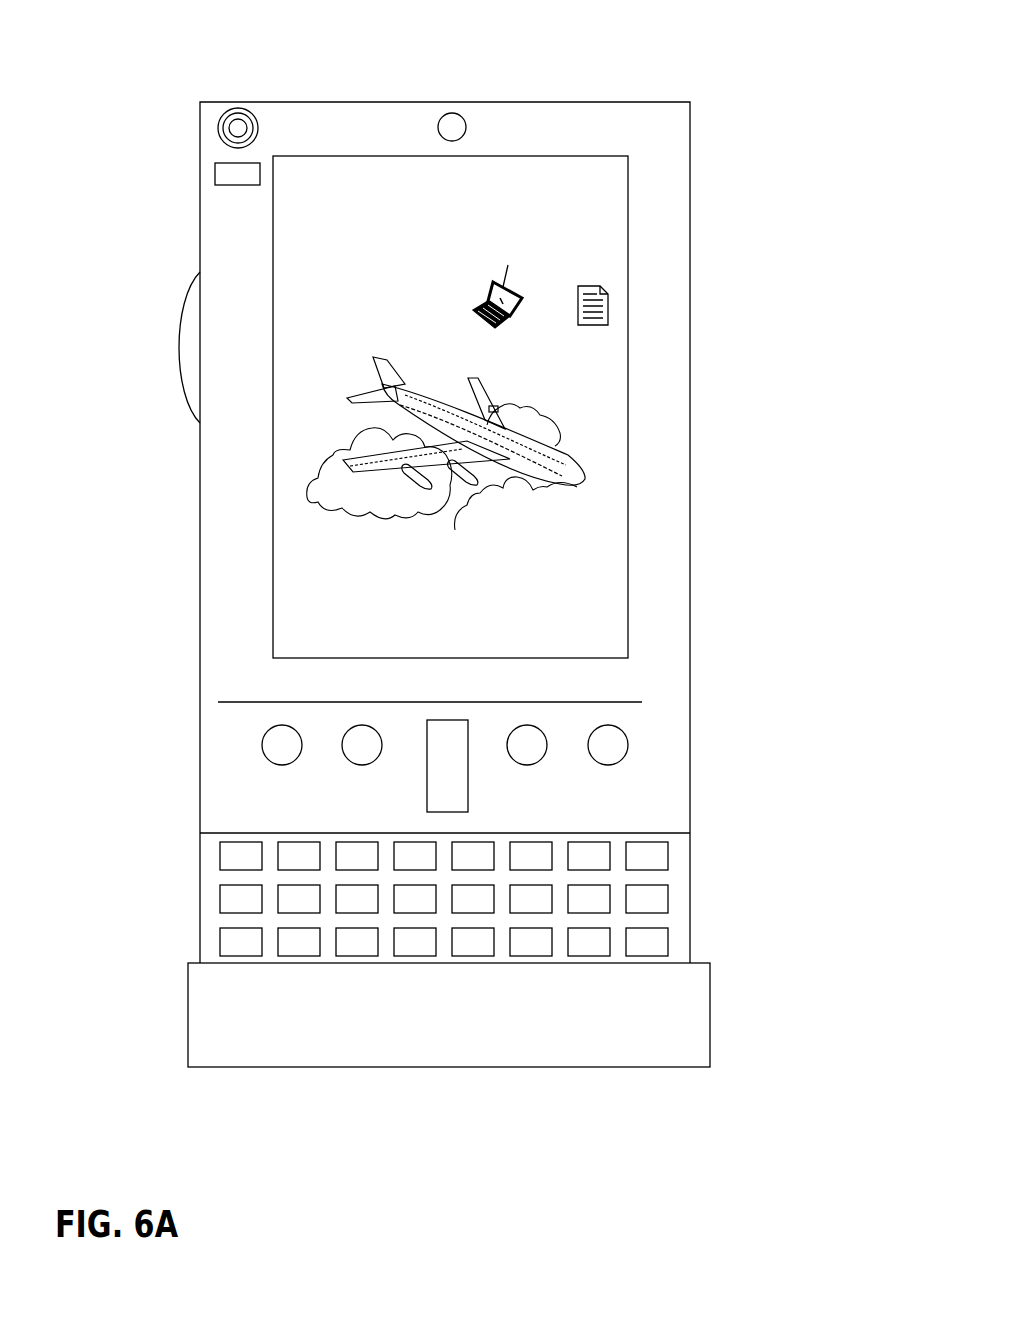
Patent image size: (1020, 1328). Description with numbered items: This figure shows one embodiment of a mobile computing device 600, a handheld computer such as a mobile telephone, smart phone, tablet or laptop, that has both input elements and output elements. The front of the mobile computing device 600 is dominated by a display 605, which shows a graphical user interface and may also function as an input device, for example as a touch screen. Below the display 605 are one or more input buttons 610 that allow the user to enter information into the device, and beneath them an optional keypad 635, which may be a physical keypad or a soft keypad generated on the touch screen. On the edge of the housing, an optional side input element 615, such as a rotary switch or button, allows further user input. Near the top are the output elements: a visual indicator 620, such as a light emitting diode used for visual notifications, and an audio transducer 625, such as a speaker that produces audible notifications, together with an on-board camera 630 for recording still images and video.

The mobile computing device 600 is at (426, 543).
The display 605 is at (380, 573).
The input buttons 610 is at (447, 772).
The side input element 615 is at (190, 347).
The visual indicator 620 is at (215, 182).
The audio transducer 625 is at (218, 128).
The on-board camera 630 is at (466, 125).
The keypad 635 is at (205, 947).